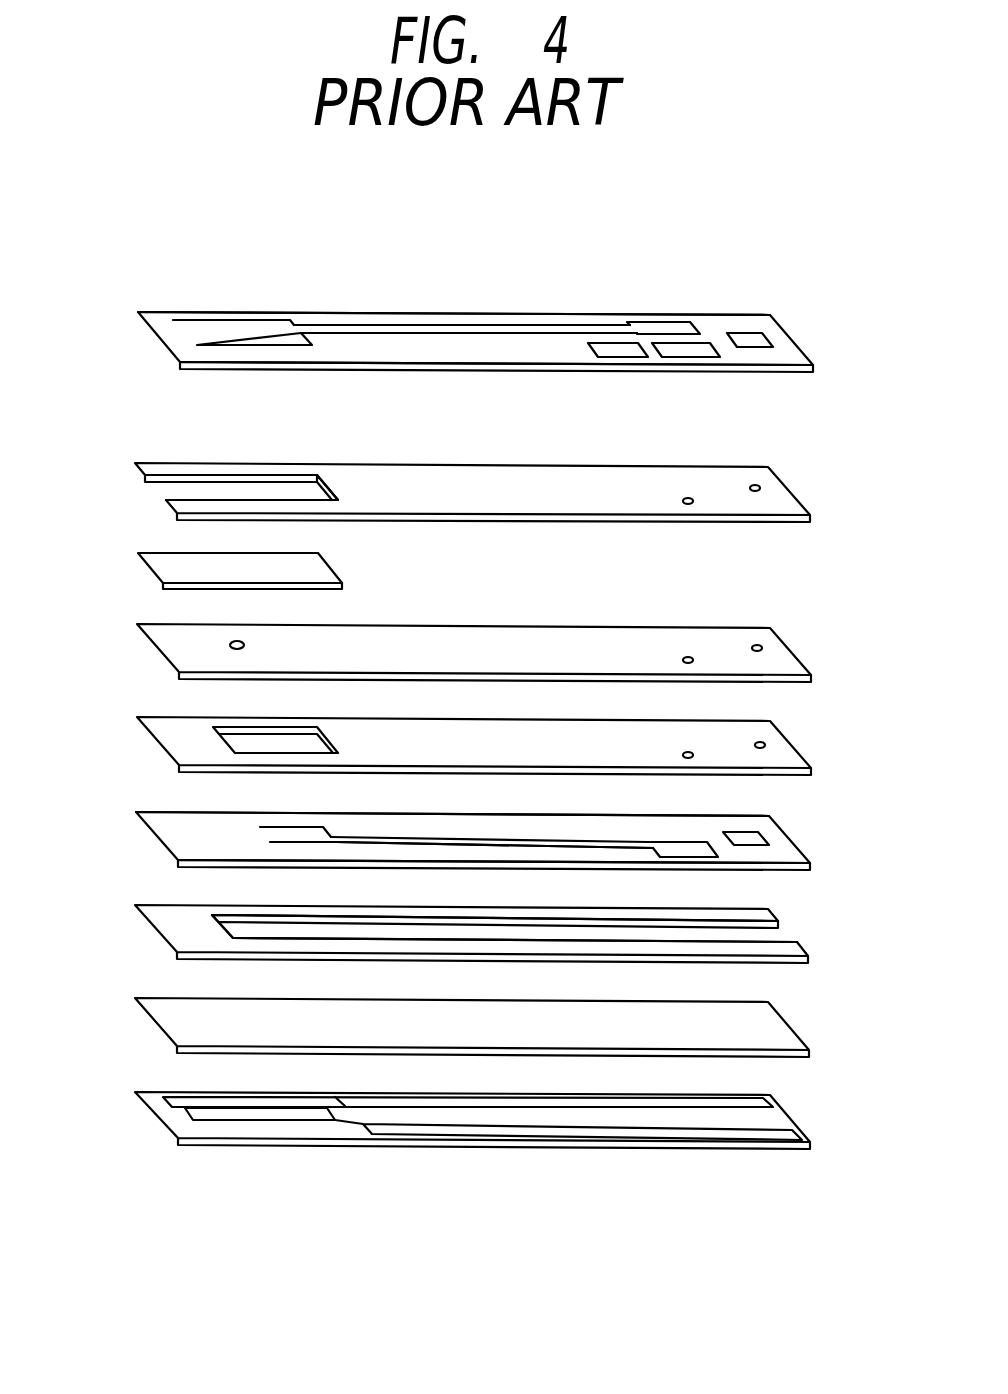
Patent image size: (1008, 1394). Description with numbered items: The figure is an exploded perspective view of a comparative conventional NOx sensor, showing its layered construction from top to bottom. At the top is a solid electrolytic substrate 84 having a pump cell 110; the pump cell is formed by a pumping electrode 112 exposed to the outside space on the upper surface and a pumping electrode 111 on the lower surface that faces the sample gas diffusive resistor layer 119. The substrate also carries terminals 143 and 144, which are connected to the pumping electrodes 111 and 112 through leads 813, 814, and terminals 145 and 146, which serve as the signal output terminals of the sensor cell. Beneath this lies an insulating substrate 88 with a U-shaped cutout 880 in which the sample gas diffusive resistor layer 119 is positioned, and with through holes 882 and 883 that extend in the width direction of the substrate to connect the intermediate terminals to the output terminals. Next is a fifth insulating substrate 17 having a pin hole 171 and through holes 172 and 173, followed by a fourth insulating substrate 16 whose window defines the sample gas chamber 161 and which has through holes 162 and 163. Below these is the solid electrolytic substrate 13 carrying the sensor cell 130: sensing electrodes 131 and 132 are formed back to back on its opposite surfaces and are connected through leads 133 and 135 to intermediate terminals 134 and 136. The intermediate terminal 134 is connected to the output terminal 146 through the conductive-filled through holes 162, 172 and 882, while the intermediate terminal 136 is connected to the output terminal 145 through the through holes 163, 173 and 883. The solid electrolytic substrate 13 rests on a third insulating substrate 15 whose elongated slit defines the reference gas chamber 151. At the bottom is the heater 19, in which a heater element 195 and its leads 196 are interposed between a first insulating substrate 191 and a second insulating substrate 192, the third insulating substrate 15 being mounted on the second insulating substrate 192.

The solid electrolytic substrate 84 is at (790, 355).
The pump cell 110 is at (287, 298).
The pumping electrode 111 is at (238, 382).
The pumping electrode 112 is at (235, 332).
The slot 814 is at (486, 326).
The slot edge 813 is at (454, 381).
The terminal 144 is at (668, 322).
The terminal 145 is at (750, 333).
The terminal 143 is at (622, 352).
The terminal 146 is at (680, 357).
The insulating substrate 88 is at (735, 480).
The U-shaped cutout 880 is at (183, 475).
The through hole 883 is at (760, 487).
The through hole 882 is at (686, 502).
The sample gas diffusive resistor layer 119 is at (160, 570).
The fifth insulating substrate 17 is at (795, 667).
The pin hole 171 is at (230, 644).
The through hole 172 is at (687, 657).
The through hole 173 is at (757, 645).
The fourth insulating substrate 16 is at (790, 758).
The sample gas chamber 161 is at (278, 732).
The through hole 162 is at (686, 752).
The through hole 163 is at (762, 744).
The solid electrolytic substrate 13 is at (785, 851).
The sensor cell 130 is at (240, 826).
The sensing electrode 131 is at (296, 874).
The sensing electrode 132 is at (298, 827).
The lead 133 is at (457, 834).
The intermediate terminal 134 is at (686, 840).
The lead 135 is at (478, 873).
The intermediate terminal 136 is at (754, 830).
The third insulating substrate 15 is at (795, 946).
The reference gas chamber 151 is at (737, 920).
The heater 19 is at (466, 1114).
The second insulating substrate 192 is at (757, 1027).
The first insulating substrate 191 is at (762, 1115).
The heater element 195 is at (270, 1128).
The leads 196 is at (585, 1132).